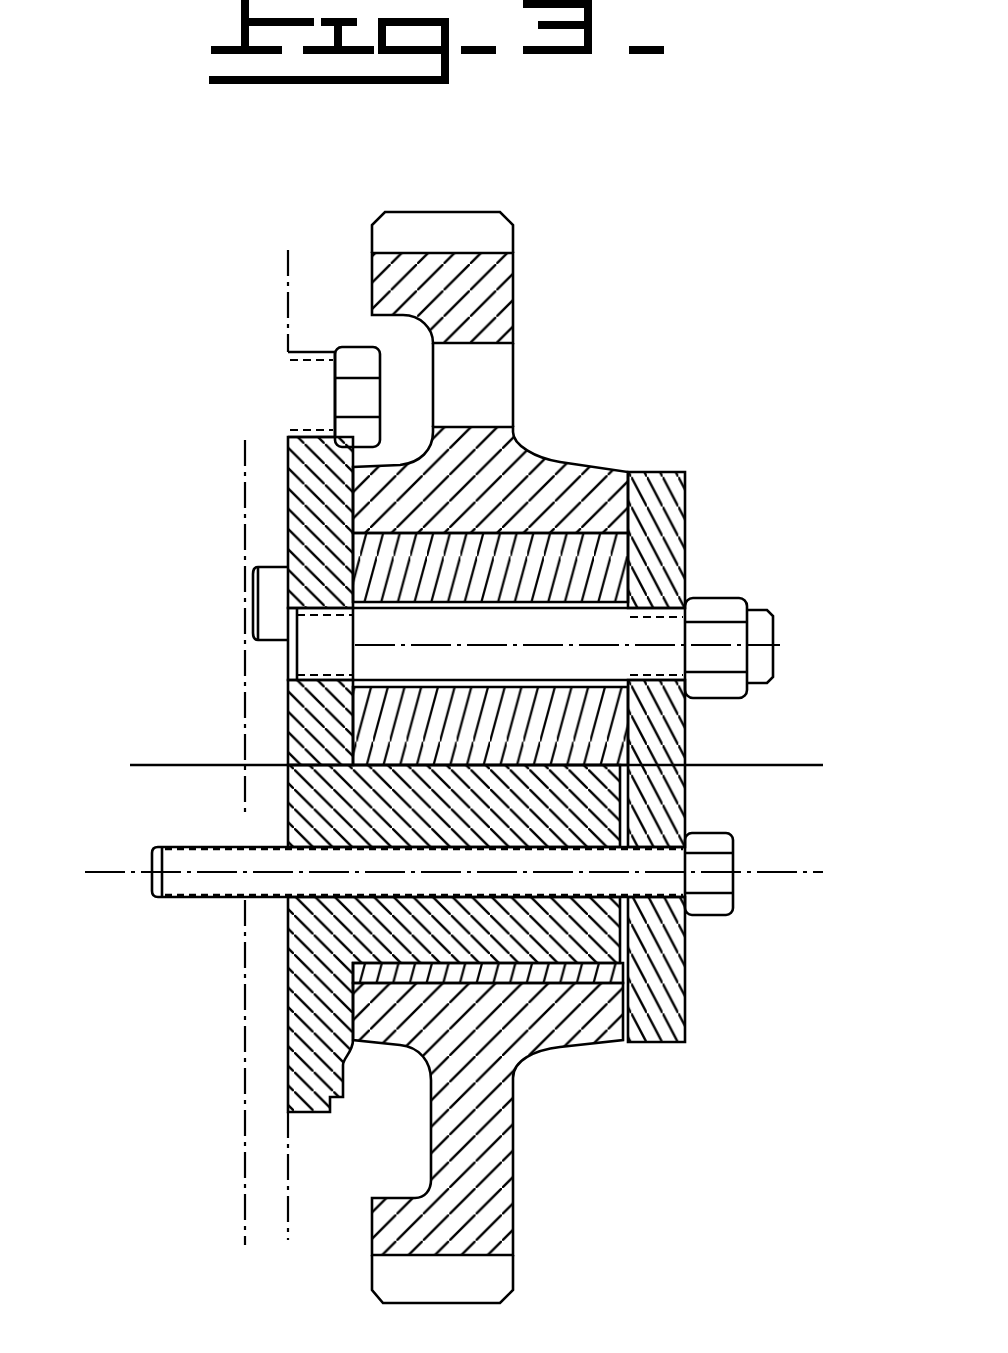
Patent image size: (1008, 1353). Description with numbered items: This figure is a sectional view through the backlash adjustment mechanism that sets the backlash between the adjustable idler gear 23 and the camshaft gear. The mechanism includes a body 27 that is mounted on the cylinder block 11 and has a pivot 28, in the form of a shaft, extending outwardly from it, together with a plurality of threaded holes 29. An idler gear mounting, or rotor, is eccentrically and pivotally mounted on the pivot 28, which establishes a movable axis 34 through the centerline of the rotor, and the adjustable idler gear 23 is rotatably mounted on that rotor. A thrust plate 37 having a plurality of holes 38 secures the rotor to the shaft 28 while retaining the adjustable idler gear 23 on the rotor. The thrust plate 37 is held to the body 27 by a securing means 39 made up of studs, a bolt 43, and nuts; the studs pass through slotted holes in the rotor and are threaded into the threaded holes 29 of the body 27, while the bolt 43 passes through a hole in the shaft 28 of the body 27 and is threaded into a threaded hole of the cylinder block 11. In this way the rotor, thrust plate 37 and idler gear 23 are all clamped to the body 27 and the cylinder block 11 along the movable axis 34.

The cylinder block 11 is at (245, 832).
The adjustable idler gear 23 is at (498, 1185).
The body 27 is at (314, 348).
The pivot 28 is at (623, 832).
The threaded holes 29 is at (287, 680).
The movable axis 34 is at (765, 765).
The thrust plate 37 is at (685, 505).
The holes 38 is at (643, 633).
The securing means 39 is at (763, 605).
The bolt 43 is at (733, 892).